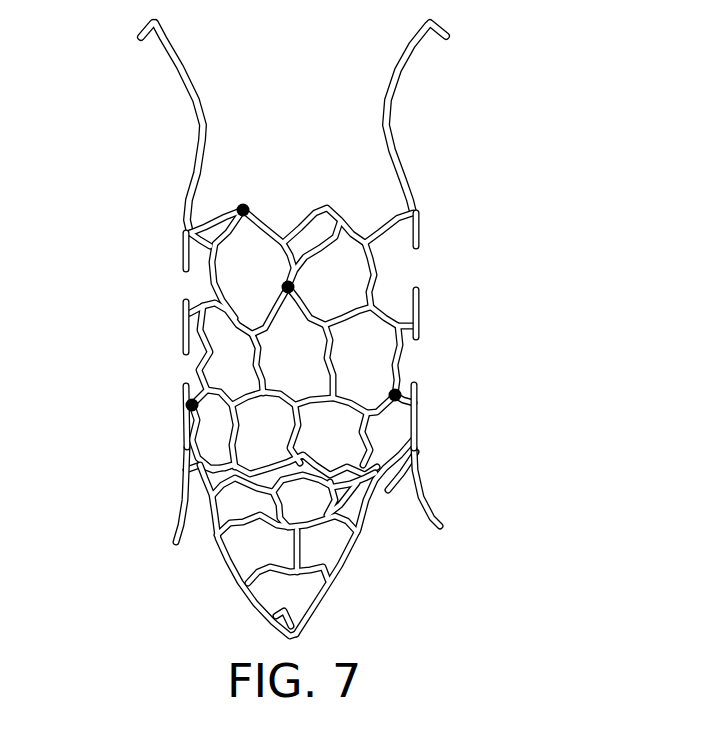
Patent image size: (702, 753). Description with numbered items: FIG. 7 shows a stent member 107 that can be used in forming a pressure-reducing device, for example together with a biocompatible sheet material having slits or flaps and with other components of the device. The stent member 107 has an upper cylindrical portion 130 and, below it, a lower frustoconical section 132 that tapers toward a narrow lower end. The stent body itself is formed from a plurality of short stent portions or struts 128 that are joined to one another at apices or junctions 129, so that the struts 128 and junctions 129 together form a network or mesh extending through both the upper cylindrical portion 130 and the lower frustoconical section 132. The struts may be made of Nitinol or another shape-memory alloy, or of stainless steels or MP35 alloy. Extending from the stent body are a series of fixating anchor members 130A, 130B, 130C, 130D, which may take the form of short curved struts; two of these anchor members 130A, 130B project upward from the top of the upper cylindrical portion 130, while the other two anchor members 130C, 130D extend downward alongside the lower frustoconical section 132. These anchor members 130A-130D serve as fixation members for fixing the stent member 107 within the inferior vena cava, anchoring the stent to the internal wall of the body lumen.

The stent member 107 is at (310, 326).
The struts 128 is at (302, 385).
The apices or junctions 129 is at (308, 311).
The upper cylindrical portion 130 is at (379, 422).
The fixating anchor member 130A is at (464, 114).
The fixating anchor member 130B is at (125, 128).
The fixating anchor member 130C is at (156, 521).
The fixating anchor member 130D is at (454, 487).
The lower frustoconical section 132 is at (386, 538).